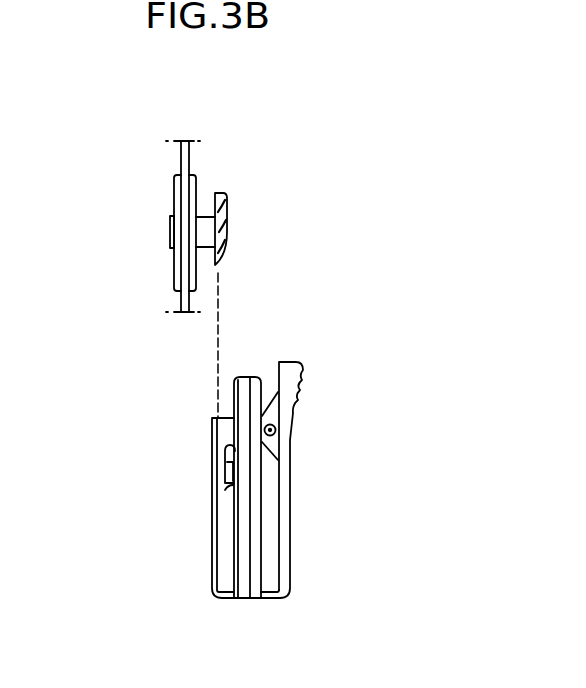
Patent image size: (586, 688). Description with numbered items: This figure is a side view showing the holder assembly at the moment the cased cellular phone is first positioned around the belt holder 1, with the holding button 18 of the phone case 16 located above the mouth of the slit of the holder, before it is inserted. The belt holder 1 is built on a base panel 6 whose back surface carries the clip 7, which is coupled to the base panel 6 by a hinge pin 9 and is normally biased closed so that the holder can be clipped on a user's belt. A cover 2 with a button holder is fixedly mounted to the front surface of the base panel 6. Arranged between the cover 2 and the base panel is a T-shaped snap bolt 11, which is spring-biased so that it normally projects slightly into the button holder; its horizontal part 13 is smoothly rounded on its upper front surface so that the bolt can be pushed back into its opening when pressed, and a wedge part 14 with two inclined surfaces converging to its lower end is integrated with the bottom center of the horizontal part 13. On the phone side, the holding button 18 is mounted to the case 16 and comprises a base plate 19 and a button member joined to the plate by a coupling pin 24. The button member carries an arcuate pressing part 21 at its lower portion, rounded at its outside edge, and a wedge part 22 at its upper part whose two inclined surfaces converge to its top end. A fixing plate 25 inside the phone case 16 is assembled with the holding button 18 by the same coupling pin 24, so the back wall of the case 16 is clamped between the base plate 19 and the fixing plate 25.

The belt holder 1 is at (332, 388).
The cover 2 is at (240, 592).
The base panel 6 is at (255, 580).
The clip 7 is at (287, 535).
The hinge pin 9 is at (276, 430).
The T-shaped snap bolt 11 is at (228, 496).
The horizontal part 13 is at (230, 453).
The wedge part 14 is at (233, 485).
The phone case 16 is at (189, 156).
The holding button 18 is at (236, 265).
The base plate 19 is at (181, 304).
The arcuate pressing part 21 is at (227, 237).
The wedge part 22 is at (224, 200).
The coupling pin 24 is at (170, 232).
The fixing plate 25 is at (173, 193).